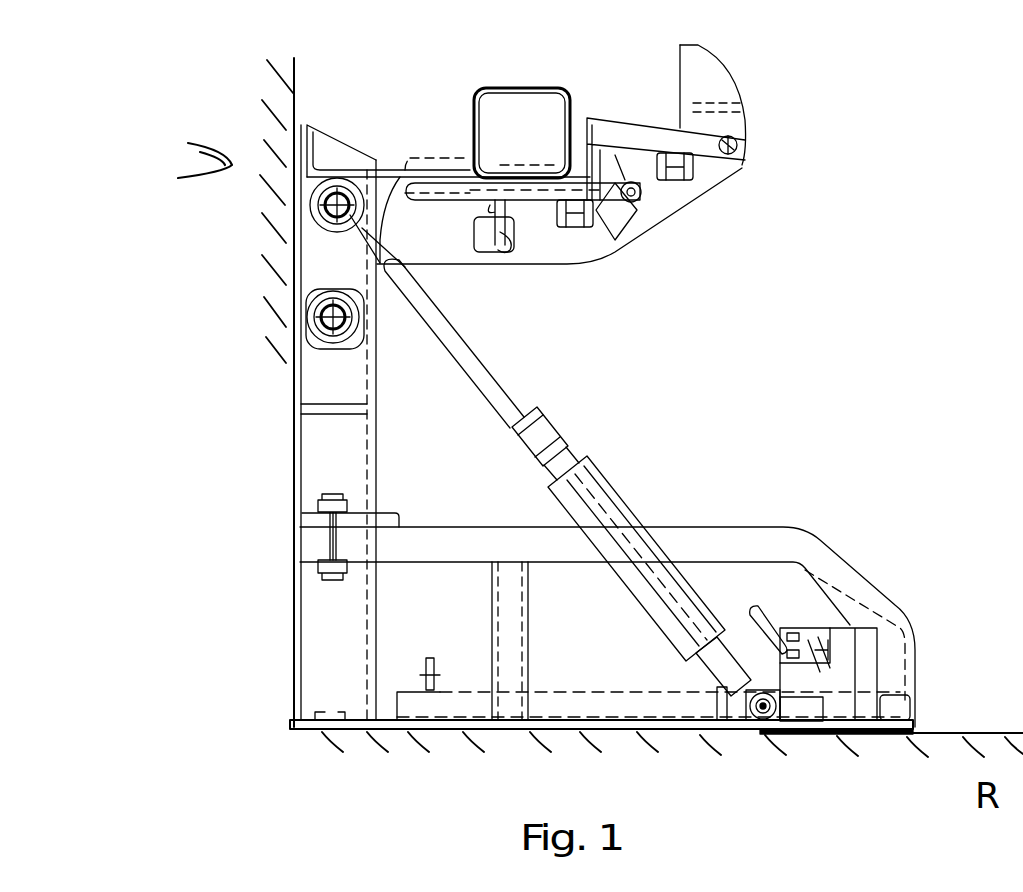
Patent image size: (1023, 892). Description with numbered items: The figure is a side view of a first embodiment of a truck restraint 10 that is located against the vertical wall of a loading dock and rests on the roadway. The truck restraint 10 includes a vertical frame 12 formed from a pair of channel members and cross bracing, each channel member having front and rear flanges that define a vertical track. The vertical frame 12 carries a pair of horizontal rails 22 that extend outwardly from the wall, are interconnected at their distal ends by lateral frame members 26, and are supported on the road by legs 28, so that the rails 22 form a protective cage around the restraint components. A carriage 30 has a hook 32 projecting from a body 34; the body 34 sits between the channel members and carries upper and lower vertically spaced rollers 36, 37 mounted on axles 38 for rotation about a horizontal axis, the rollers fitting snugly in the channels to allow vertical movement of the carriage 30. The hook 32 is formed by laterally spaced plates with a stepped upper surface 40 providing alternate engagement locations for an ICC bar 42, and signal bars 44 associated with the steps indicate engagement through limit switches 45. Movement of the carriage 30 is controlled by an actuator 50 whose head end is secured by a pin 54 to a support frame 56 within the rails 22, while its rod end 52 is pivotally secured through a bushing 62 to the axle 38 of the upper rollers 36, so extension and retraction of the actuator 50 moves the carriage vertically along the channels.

The truck restraint 10 is at (258, 405).
The vertical frame 12 is at (318, 461).
The horizontal rails 22 is at (440, 543).
The lateral frame members 26 is at (913, 712).
The legs 28 is at (507, 613).
The carriage 30 is at (322, 263).
The hook 32 is at (580, 247).
The body 34 is at (293, 294).
The upper rollers 36 is at (340, 185).
The lower rollers 37 is at (323, 350).
The axles 38 is at (325, 208).
The stepped upper surface 40 is at (405, 150).
The ICC bar 42 is at (522, 87).
The signal bars 44 is at (430, 200).
The limit switches 45 is at (505, 245).
The actuator 50 is at (572, 430).
The rod end 52 is at (430, 292).
The pin 54 is at (763, 720).
The support frame 56 is at (683, 712).
The bushing 62 is at (300, 165).